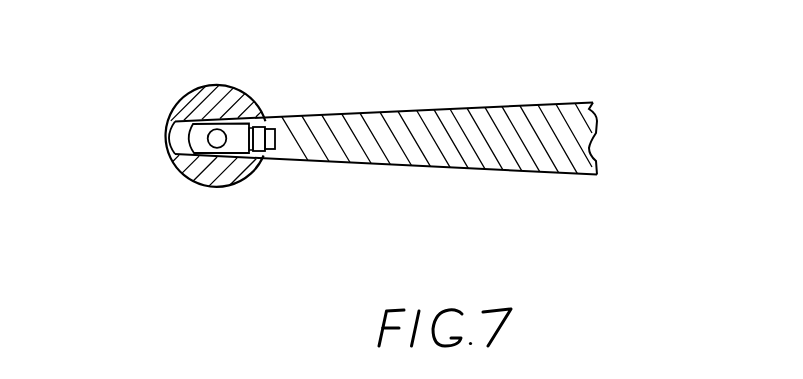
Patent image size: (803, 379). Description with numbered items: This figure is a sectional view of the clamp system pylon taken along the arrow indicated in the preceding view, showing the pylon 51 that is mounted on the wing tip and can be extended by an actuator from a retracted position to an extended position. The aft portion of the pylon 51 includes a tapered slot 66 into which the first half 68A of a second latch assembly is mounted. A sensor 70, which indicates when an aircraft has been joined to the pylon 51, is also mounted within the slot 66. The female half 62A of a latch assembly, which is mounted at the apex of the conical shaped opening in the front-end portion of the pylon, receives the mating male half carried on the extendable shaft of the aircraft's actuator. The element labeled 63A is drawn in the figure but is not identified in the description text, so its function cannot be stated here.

The pylon 51 is at (195, 90).
The female half of latch assembly 62A is at (176, 147).
The tapered slot 66 is at (182, 137).
The hole 63A is at (225, 145).
The first half of second latch assembly 68A is at (257, 127).
The sensor 70 is at (278, 129).